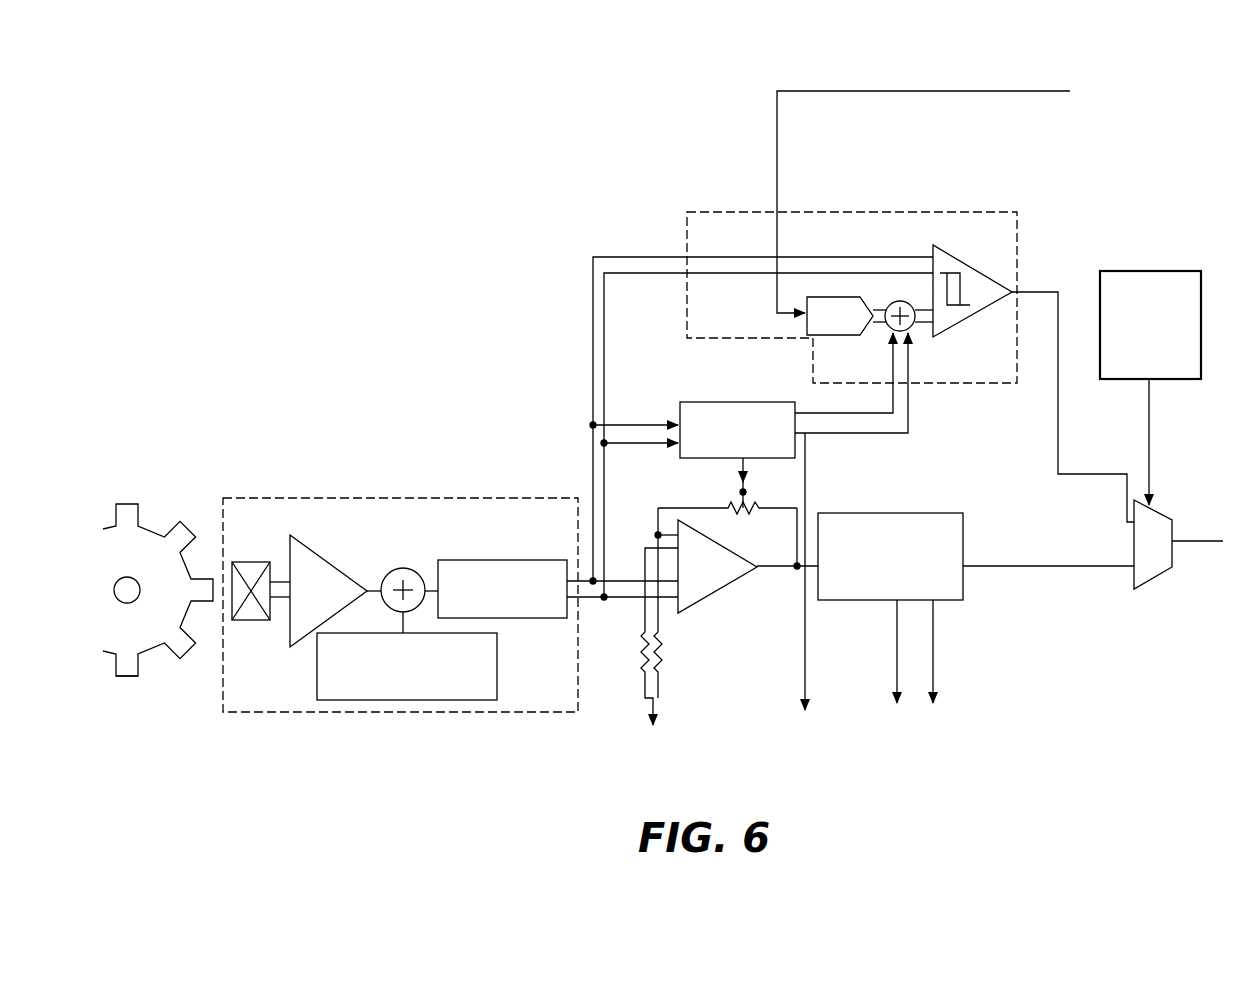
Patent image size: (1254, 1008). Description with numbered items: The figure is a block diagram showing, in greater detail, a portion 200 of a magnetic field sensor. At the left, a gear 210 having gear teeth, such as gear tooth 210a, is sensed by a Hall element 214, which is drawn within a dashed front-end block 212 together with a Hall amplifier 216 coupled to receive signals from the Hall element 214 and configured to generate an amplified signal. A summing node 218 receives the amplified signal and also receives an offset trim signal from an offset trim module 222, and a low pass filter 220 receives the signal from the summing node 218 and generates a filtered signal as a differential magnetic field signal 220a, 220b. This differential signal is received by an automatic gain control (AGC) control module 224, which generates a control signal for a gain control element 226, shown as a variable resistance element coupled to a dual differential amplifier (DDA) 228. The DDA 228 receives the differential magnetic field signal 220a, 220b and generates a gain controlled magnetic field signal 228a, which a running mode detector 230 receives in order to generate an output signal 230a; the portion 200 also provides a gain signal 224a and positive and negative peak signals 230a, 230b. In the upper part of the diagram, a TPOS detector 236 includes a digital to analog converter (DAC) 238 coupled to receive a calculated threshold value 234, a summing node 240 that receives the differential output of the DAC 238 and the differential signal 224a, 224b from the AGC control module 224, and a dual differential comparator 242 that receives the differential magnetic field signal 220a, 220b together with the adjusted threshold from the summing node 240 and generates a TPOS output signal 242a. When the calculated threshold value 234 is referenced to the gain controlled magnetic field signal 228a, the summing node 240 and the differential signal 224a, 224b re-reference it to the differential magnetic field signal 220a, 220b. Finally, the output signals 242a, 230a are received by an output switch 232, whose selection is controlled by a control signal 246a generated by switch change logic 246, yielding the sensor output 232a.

The portion of magnetic field sensor 200 is at (460, 213).
The gear 210 is at (120, 504).
The gear tooth 210a is at (130, 678).
The sensor front end block 212 is at (275, 498).
The Hall element 214 is at (245, 562).
The Hall amplifier 216 is at (320, 556).
The summing node 218 is at (410, 567).
The low pass filter 220 is at (458, 560).
The differential signal 220a is at (593, 328).
The differential signal 220b is at (610, 362).
The offset trim module 222 is at (497, 643).
The automatic gain control (AGC) control module 224 is at (705, 402).
The gain signal 224a is at (800, 414).
The differential signal 224b is at (800, 440).
The gain control element 226 is at (740, 492).
The dual differential amplifier (DDA) 228 is at (710, 546).
The gain controlled magnetic field signal 228a is at (793, 572).
The running mode detector 230 is at (915, 513).
The output signal / positive peak signal 230a is at (1045, 564).
The negative peak signal 230b is at (935, 640).
The output switch 232 is at (1160, 518).
The output signal 232a is at (1195, 544).
The calculated threshold value 234 is at (775, 152).
The TPOS detector 236 is at (920, 211).
The digital to analog converter (DAC) 238 is at (806, 332).
The summing node 240 is at (912, 330).
The dual differential comparator 242 is at (945, 258).
The TPOS output signal 242a is at (1058, 432).
The switch change logic 246 is at (1135, 271).
The control signal 246a is at (1155, 405).